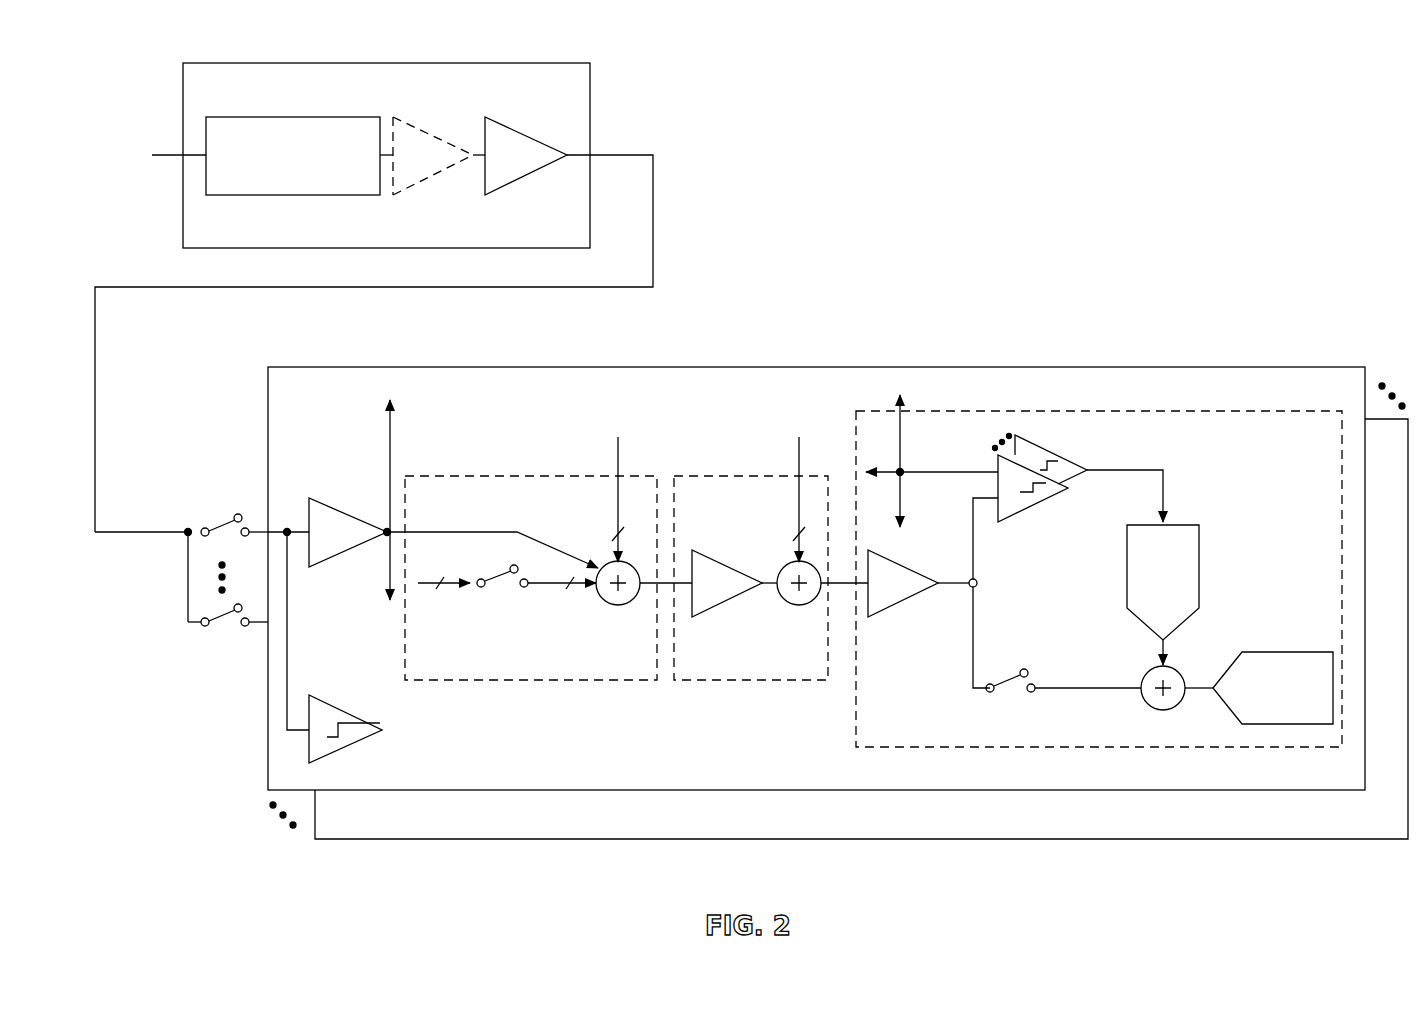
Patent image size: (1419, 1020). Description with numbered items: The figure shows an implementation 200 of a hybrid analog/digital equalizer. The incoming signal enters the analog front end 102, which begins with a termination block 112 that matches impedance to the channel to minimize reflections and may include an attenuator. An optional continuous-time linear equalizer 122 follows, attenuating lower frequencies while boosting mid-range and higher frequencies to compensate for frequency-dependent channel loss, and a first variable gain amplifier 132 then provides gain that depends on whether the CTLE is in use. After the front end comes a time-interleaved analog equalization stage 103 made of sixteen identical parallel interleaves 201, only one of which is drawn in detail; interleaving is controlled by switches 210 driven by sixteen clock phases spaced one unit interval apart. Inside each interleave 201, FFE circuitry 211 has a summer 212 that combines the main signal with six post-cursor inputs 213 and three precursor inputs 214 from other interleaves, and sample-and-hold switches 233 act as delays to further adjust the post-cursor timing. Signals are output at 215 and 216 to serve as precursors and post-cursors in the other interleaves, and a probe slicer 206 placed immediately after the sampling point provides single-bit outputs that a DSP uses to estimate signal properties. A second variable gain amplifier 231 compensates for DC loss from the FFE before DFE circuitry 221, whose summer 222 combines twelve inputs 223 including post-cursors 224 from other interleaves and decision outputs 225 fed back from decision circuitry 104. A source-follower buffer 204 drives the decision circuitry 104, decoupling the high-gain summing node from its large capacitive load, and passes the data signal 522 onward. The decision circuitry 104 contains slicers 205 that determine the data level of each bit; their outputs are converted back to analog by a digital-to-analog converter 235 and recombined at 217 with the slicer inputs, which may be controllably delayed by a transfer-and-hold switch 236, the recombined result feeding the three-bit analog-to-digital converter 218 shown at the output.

The hybrid analog/digital equalizer 200 is at (1270, 52).
The analog front end 102 is at (253, 63).
The termination block 112 is at (273, 117).
The continuous-time linear equalizer 122 is at (393, 195).
The variable gain amplifier 132 is at (508, 180).
The time-interleaved analog equalization stage 103 is at (858, 360).
The decision circuitry 104 is at (1275, 411).
The interleave 201 is at (265, 722).
The source-follower buffer 204 is at (905, 602).
The slicer 205 is at (1058, 456).
The probe slicer 206 is at (352, 745).
The switches 210 is at (186, 592).
The FFE circuitry 211 is at (467, 476).
The summer 212 is at (616, 606).
The post-cursor inputs 213 is at (455, 586).
The precursor inputs 214 is at (615, 465).
The output 215 is at (387, 521).
The output 216 is at (385, 547).
The recombining circuitry 217 is at (1163, 712).
The 3-bit ADC 218 is at (1302, 650).
The DFE circuitry 221 is at (700, 476).
The summer 222 is at (770, 597).
The inputs 223 is at (798, 465).
The post-cursors 224 is at (895, 428).
The decision outputs 225 is at (884, 480).
The second variable gain amplifier 231 is at (718, 605).
The sample-and-hold switches 233 is at (516, 586).
The digital-to-analog converter 235 is at (1185, 522).
The transfer-and-hold switch 236 is at (1010, 690).
The data signal 522 is at (852, 585).